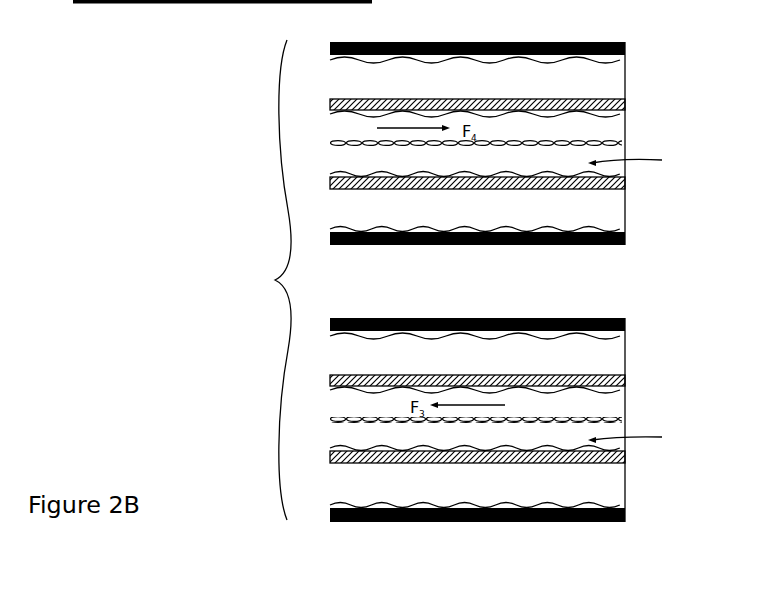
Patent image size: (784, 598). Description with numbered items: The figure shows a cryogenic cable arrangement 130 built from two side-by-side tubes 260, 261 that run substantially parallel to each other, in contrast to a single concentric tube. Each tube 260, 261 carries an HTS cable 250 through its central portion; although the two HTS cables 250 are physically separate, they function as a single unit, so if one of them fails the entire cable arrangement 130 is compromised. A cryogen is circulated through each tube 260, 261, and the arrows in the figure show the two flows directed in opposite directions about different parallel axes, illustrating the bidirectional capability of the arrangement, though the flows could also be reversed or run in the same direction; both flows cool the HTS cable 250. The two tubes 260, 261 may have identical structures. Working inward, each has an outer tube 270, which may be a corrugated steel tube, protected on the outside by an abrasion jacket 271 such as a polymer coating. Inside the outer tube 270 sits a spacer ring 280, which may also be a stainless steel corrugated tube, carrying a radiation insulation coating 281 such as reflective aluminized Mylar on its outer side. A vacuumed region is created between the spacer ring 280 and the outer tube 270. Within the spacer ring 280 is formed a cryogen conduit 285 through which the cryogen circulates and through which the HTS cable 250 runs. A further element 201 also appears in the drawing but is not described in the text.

The cryogenic cable arrangement 130 is at (275, 280).
The conveyor belt 201 is at (372, 3).
The HTS cable 250 is at (345, 141).
The tube 260 is at (611, 38).
The tube 261 is at (545, 530).
The outer tube 270 is at (624, 60).
The abrasion jacket 271 is at (456, 42).
The spacer ring 280 is at (612, 114).
The radiation insulation coating 281 is at (607, 103).
The cryogen conduit 285 is at (641, 302).